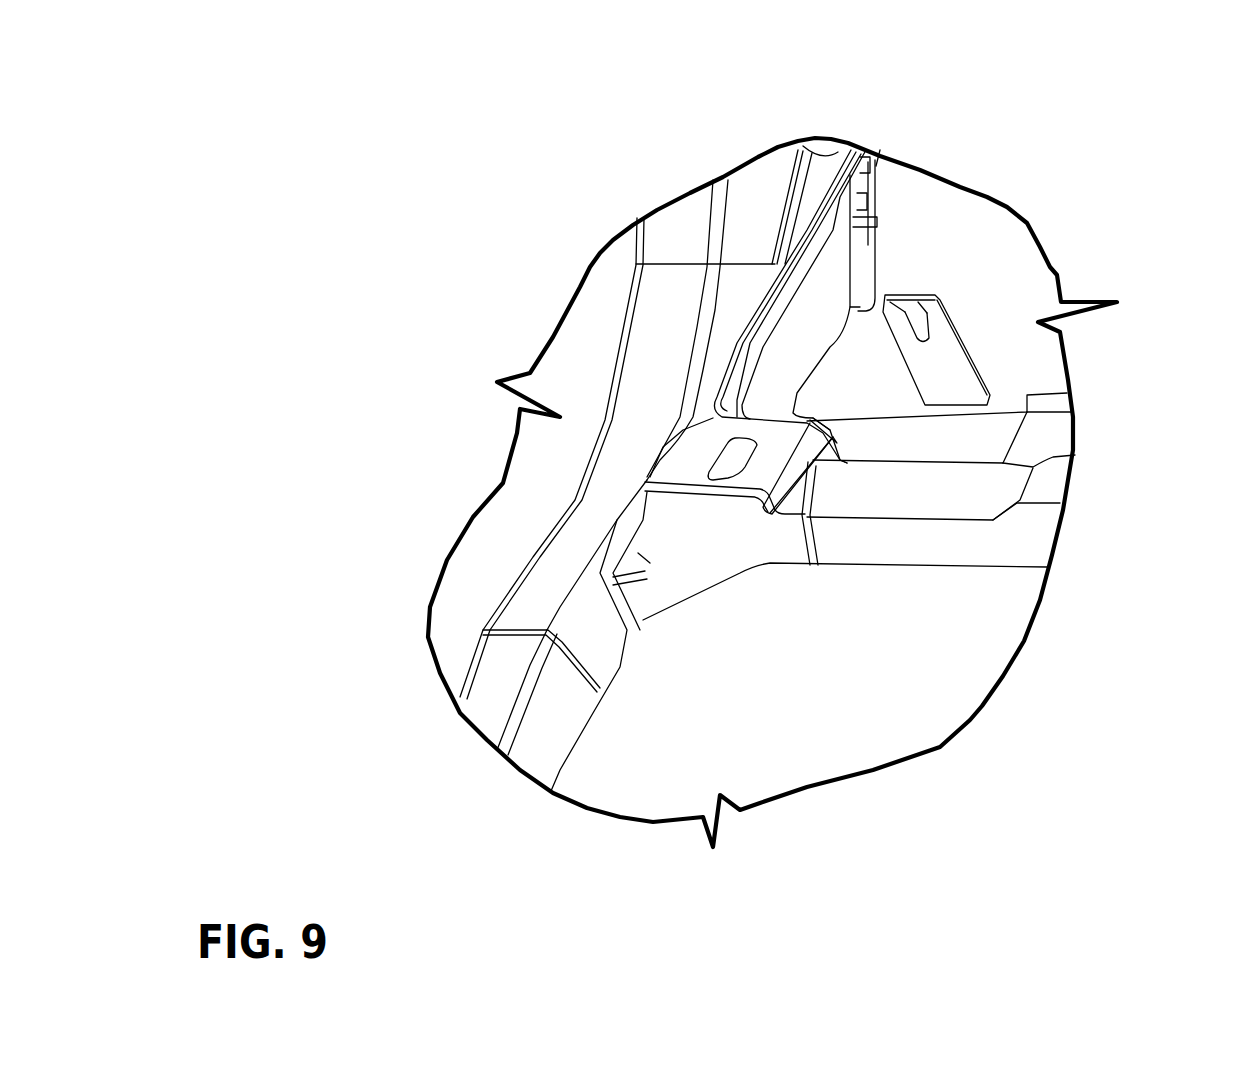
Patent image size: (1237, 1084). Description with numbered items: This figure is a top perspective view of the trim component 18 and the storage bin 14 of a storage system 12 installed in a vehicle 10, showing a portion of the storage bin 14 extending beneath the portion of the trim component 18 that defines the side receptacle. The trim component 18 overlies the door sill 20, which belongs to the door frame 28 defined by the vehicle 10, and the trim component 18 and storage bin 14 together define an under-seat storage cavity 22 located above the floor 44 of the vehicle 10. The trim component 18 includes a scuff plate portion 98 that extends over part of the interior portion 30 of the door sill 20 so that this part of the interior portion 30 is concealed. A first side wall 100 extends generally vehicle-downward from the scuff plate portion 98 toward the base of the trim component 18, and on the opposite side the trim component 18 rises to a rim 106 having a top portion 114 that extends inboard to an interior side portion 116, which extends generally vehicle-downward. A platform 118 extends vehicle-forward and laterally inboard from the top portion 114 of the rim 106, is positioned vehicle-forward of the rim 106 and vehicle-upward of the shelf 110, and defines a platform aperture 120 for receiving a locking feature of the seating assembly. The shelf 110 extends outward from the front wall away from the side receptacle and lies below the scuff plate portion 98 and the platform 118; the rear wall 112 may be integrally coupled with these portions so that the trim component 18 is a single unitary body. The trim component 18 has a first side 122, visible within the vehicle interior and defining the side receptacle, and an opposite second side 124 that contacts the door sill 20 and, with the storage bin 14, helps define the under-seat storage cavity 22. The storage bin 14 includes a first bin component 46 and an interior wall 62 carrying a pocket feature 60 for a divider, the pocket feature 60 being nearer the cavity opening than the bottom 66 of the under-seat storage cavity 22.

The vehicle 10 is at (676, 184).
The storage system 12 is at (984, 222).
The storage bin 14 is at (1032, 372).
The trim component 18 is at (686, 280).
The door sill 20 is at (497, 673).
The under-seat storage cavity 22 is at (997, 414).
The door frame 28 is at (513, 650).
The interior portion 30 is at (473, 697).
The floor 44 is at (950, 650).
The first bin component 46 is at (1027, 442).
The pocket feature 60 is at (917, 314).
The interior wall 62 is at (1003, 310).
The bottom 66 is at (908, 456).
The scuff plate portion 98 is at (590, 496).
The first side wall 100 is at (754, 290).
The rim 106 is at (759, 316).
The shelf 110 is at (638, 553).
The rear wall 112 is at (828, 167).
The top portion 114 is at (737, 351).
The interior side portion 116 is at (815, 253).
The platform 118 is at (668, 478).
The platform aperture 120 is at (730, 467).
The first side 122 is at (547, 587).
The second side 124 is at (780, 369).